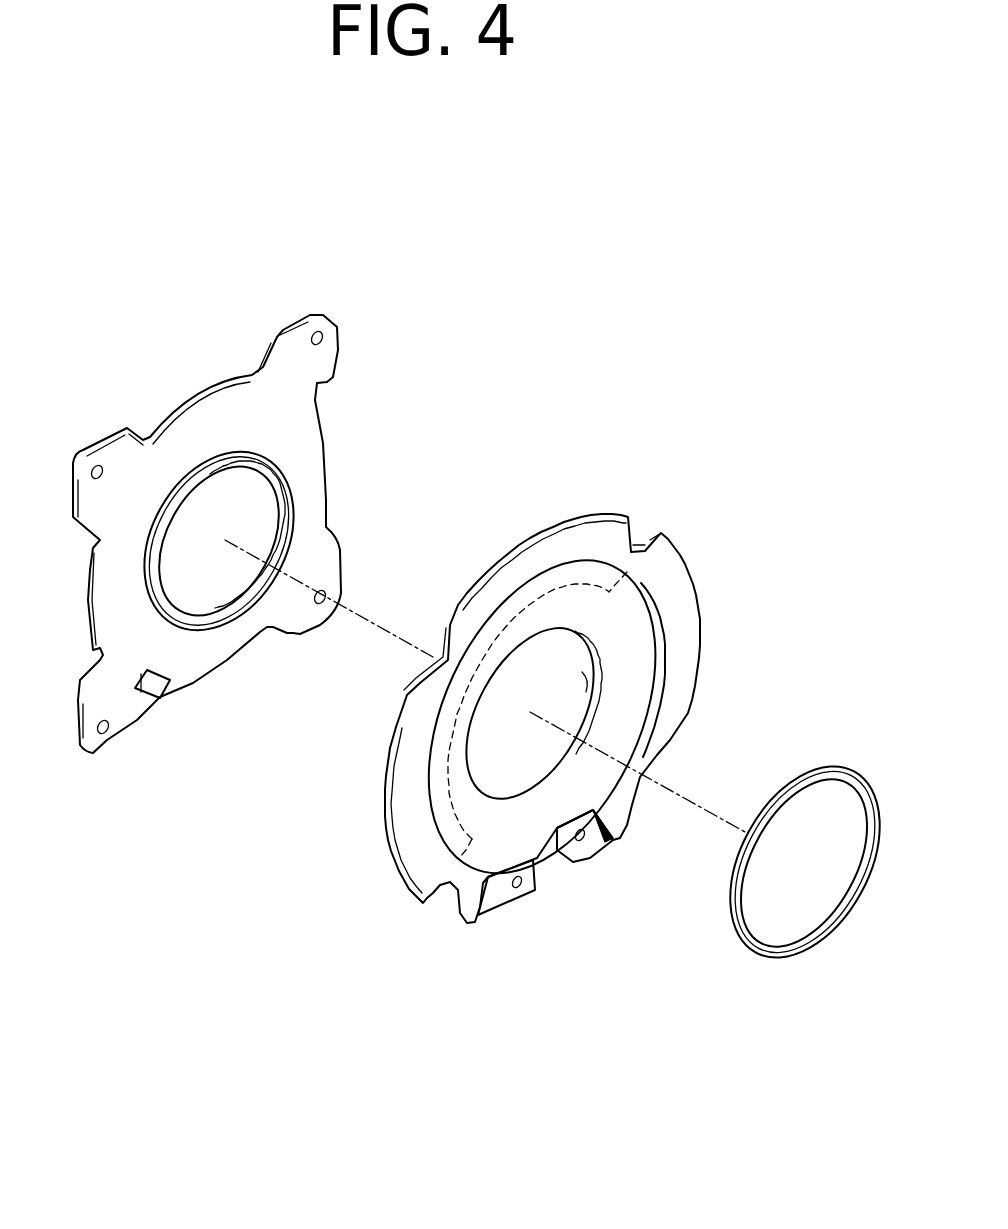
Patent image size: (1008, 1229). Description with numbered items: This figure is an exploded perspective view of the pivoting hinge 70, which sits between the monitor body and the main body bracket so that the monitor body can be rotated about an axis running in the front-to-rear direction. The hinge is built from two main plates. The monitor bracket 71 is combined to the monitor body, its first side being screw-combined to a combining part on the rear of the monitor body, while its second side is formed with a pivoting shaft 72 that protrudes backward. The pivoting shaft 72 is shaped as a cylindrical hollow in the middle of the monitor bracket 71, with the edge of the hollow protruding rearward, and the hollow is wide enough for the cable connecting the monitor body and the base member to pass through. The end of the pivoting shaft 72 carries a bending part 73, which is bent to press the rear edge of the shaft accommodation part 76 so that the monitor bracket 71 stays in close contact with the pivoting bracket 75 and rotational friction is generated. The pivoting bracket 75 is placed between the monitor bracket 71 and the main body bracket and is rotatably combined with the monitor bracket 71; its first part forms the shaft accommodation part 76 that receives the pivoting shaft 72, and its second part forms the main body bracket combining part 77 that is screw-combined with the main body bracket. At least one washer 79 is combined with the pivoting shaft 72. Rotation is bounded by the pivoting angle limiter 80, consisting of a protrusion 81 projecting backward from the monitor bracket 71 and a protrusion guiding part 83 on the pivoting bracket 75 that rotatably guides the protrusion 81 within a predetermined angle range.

The pivoting hinge 70 is at (650, 331).
The monitor bracket 71 is at (310, 383).
The pivoting shaft 72 is at (187, 480).
The bending part 73 is at (310, 505).
The pivoting bracket 75 is at (800, 653).
The shaft accommodation part 76 is at (590, 704).
The main body bracket combining part 77 is at (634, 808).
The washer 79 is at (788, 955).
The pivoting angle limiter 80 is at (243, 845).
The protrusion 81 is at (155, 697).
The protrusion guiding part 83 is at (437, 740).